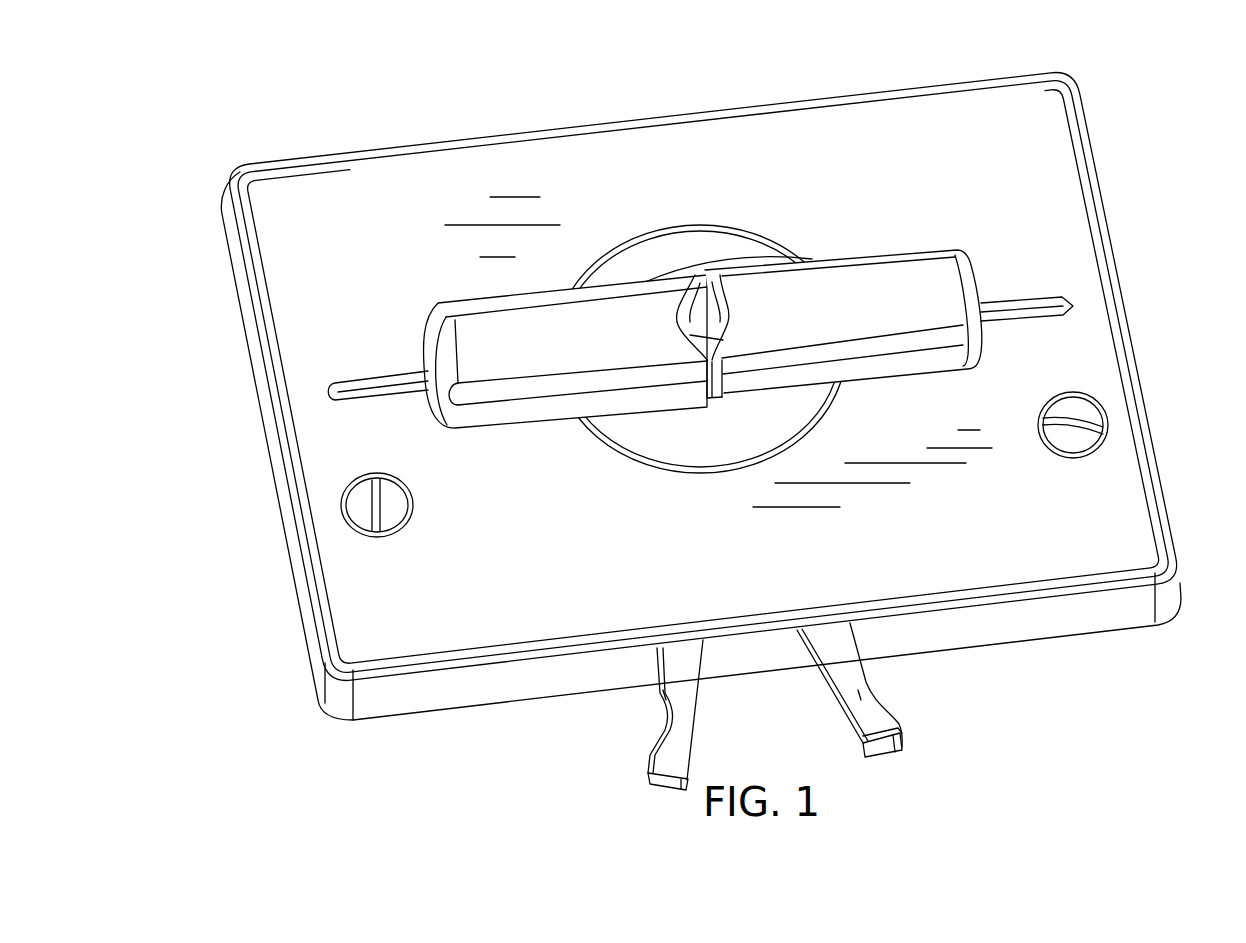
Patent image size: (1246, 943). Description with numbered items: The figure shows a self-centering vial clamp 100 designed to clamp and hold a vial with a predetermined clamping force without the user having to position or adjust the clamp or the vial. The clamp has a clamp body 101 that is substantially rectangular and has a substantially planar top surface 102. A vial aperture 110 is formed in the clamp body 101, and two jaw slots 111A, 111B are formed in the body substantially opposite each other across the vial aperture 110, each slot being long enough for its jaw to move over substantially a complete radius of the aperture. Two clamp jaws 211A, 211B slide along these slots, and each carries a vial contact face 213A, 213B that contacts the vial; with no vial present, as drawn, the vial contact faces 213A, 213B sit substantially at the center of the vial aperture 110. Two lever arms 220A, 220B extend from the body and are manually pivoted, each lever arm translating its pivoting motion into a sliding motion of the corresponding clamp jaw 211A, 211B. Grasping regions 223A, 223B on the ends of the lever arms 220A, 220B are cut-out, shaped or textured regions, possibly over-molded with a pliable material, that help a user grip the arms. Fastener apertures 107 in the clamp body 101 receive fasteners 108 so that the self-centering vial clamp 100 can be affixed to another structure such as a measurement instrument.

The self-centering vial clamp 100 is at (673, 416).
The clamp body 101 is at (376, 152).
The top surface 102 is at (922, 108).
The fastener apertures 107 is at (340, 500).
The fasteners 108 is at (362, 513).
The vial aperture 110 is at (672, 247).
The jaw slot 111A is at (350, 386).
The jaw slot 111B is at (1076, 305).
The clamp jaw 211A is at (484, 303).
The clamp jaw 211B is at (930, 252).
The vial contact face 213A is at (683, 312).
The vial contact face 213B is at (703, 306).
The lever arm 220A is at (633, 736).
The lever arm 220B is at (890, 724).
The grasping region 223A is at (623, 690).
The grasping region 223B is at (903, 657).